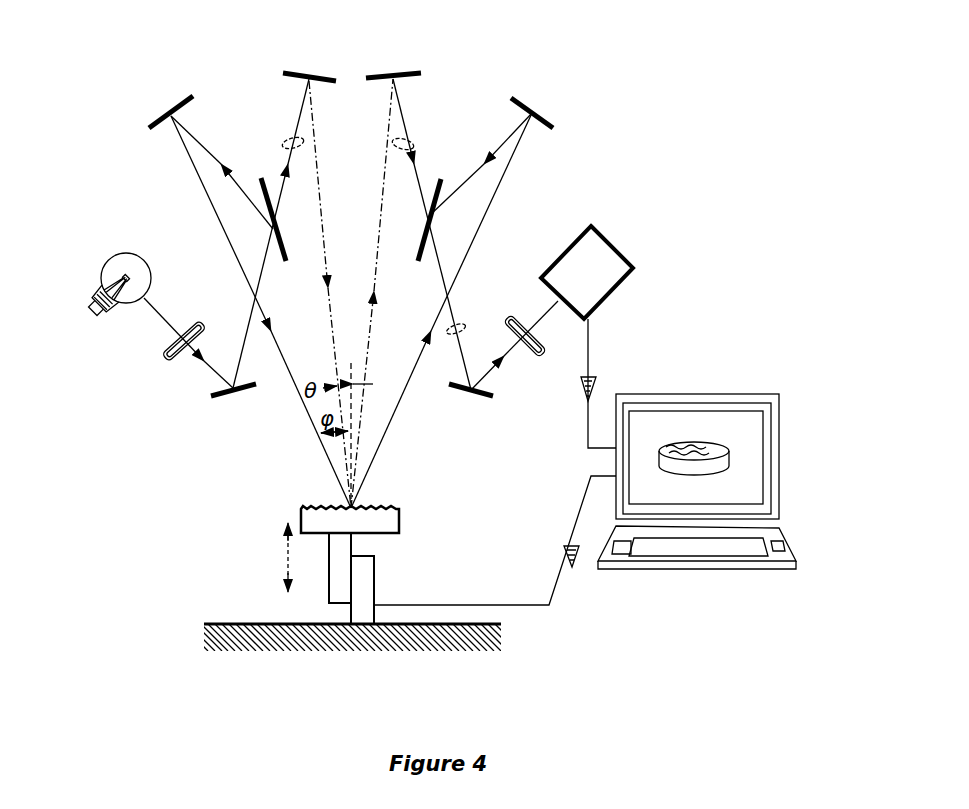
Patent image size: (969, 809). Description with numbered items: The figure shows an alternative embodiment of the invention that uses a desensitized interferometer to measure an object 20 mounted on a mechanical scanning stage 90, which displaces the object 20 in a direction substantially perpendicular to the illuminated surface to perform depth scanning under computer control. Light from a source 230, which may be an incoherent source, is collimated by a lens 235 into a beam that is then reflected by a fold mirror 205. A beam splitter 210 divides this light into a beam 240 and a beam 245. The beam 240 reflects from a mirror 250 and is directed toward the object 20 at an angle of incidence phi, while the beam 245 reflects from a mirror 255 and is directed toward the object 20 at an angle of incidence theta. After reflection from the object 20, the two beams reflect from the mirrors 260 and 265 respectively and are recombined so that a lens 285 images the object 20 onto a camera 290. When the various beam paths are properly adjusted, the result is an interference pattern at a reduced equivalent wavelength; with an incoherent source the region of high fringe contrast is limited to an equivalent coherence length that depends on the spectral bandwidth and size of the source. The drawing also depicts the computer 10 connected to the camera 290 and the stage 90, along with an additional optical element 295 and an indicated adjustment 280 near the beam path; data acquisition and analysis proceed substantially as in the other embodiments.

The computer 10 is at (782, 452).
The object 20 is at (402, 522).
The mechanical scanning stage 90 is at (360, 543).
The fold mirror 205 is at (233, 408).
The beam splitter 210 is at (150, 320).
The light source 230 is at (97, 287).
The lens 235 is at (168, 358).
The beam 240 is at (232, 187).
The beam 245 is at (283, 143).
The mirror 250 is at (241, 296).
The mirror 255 is at (317, 274).
The mirror 260 is at (568, 203).
The mirror 265 is at (458, 108).
The rotation of mirror 280 is at (465, 328).
The lens 285 is at (541, 356).
The camera 290 is at (612, 337).
The mirror 295 is at (502, 368).